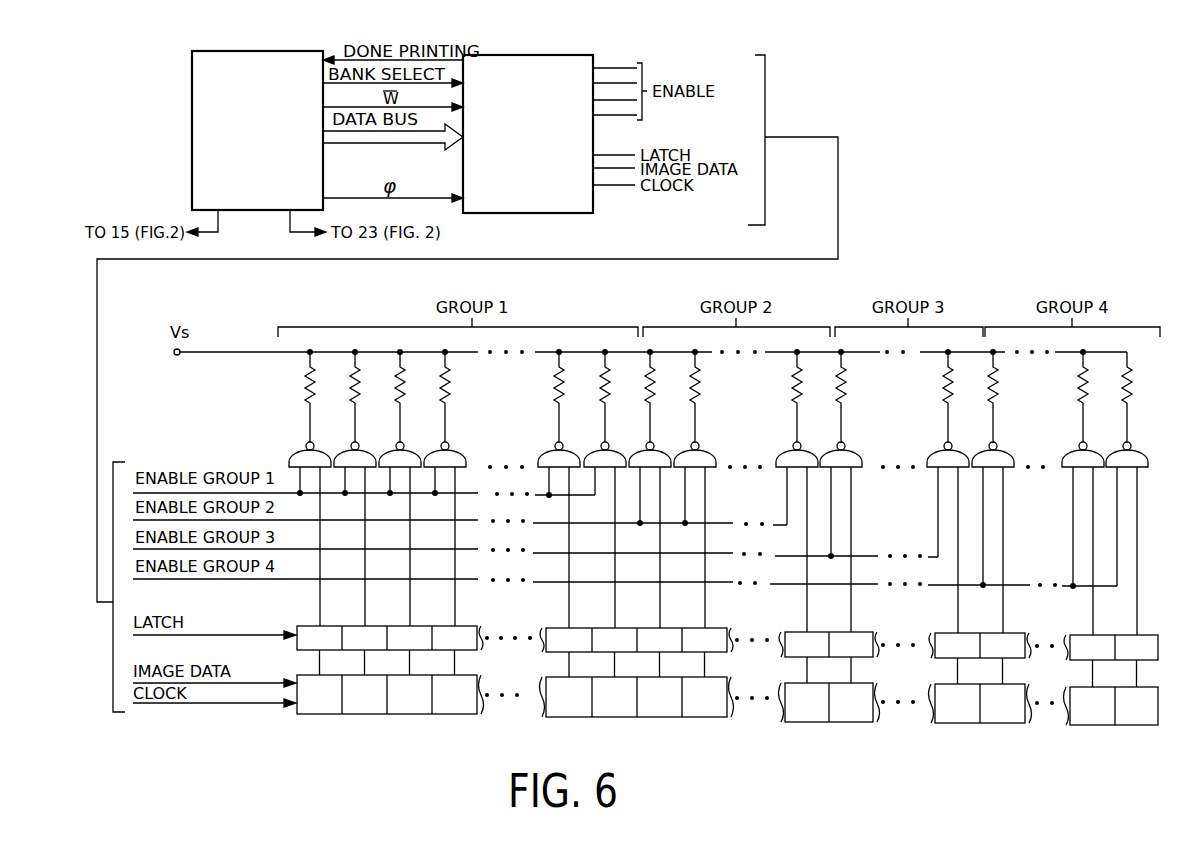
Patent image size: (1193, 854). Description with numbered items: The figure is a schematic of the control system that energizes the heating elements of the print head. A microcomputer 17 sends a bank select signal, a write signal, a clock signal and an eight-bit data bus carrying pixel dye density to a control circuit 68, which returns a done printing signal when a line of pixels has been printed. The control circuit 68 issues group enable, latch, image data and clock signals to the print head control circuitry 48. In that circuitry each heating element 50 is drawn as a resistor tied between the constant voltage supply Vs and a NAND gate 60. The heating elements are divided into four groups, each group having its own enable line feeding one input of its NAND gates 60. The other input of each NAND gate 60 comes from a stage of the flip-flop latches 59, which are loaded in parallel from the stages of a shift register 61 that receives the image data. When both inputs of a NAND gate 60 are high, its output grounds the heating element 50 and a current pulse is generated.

The microcomputer 17 is at (192, 150).
The control circuit 68 is at (593, 211).
The heating element 50 is at (451, 388).
The NAND gate 60 is at (455, 453).
The flip-flop latches 59 is at (471, 627).
The shift register 61 is at (477, 715).
The print head control circuitry 48 is at (912, 740).